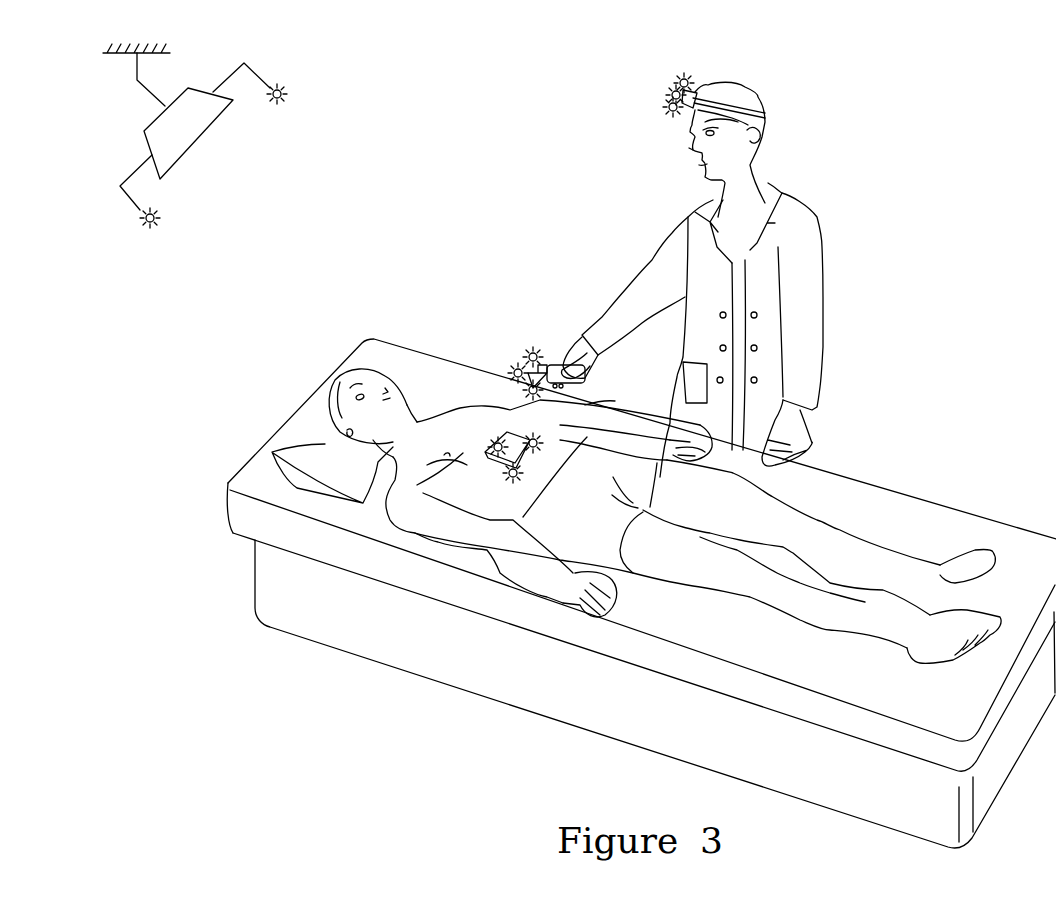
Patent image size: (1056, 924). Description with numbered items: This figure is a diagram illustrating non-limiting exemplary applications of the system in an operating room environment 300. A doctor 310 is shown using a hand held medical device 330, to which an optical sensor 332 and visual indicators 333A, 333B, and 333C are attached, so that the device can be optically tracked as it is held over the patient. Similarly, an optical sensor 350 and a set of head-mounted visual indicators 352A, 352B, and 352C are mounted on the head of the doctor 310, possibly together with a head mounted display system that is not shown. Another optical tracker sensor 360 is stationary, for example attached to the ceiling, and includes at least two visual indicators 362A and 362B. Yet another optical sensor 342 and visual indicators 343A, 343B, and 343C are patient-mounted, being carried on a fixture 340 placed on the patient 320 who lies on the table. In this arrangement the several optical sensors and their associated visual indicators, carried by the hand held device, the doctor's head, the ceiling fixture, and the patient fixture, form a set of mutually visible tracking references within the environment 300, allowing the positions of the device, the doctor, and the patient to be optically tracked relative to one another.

The environment 300 is at (381, 186).
The doctor 310 is at (750, 100).
The patient 320 is at (340, 372).
The hand held medical device 330 is at (555, 366).
The optical sensor 332 is at (538, 364).
The visual indicator 333A is at (528, 353).
The visual indicator 333B is at (515, 372).
The visual indicator 333C is at (547, 362).
The fixture 340 is at (487, 452).
The optical sensor 342 is at (600, 403).
The visual indicator 343A is at (498, 450).
The visual indicator 343B is at (513, 476).
The visual indicator 343C is at (535, 448).
The optical sensor 350 is at (695, 92).
The head-mounted marker 352A is at (684, 80).
The head-mounted marker 352B is at (673, 95).
The head-mounted marker 352C is at (670, 108).
The optical tracker sensor 360 is at (157, 120).
The visual indicator 362A is at (161, 222).
The visual indicator 362B is at (288, 91).